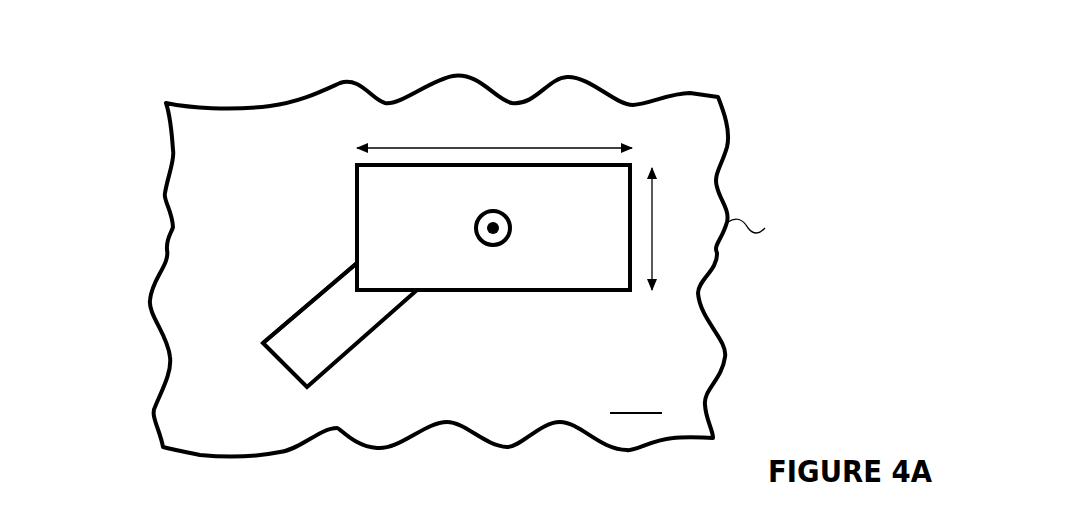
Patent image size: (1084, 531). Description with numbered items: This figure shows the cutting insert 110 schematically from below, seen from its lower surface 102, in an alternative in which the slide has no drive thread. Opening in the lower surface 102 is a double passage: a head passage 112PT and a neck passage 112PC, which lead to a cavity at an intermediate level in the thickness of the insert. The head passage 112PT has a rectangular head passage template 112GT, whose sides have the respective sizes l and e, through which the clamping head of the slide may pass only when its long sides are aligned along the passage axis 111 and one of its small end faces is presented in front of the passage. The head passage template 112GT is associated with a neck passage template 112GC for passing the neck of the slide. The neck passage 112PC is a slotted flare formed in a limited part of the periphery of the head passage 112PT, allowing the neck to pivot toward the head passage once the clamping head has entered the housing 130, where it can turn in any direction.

The cutting insert 110 is at (192, 87).
The passage axis 111 is at (491, 228).
The head passage template 112GT is at (537, 190).
The head passage 112PT is at (507, 290).
The neck passage 112PC is at (317, 343).
The neck passage template 112GC is at (372, 318).
The lower surface 102 is at (636, 397).
The housing 130 is at (770, 230).